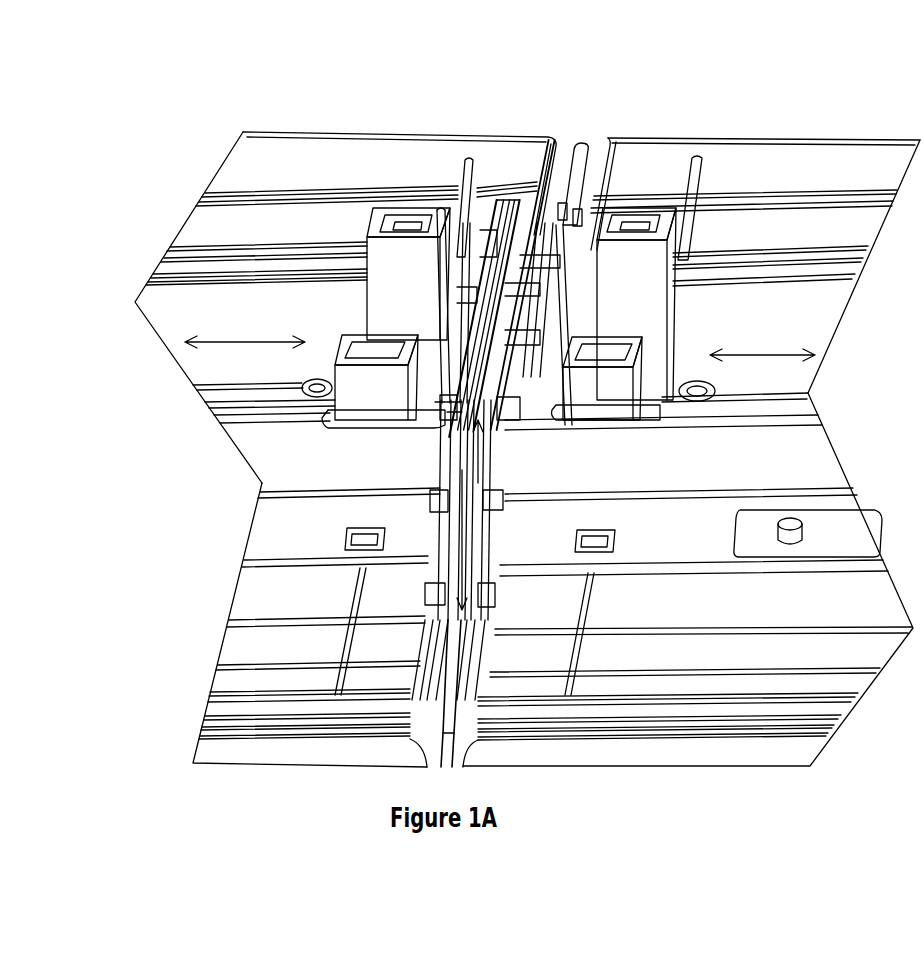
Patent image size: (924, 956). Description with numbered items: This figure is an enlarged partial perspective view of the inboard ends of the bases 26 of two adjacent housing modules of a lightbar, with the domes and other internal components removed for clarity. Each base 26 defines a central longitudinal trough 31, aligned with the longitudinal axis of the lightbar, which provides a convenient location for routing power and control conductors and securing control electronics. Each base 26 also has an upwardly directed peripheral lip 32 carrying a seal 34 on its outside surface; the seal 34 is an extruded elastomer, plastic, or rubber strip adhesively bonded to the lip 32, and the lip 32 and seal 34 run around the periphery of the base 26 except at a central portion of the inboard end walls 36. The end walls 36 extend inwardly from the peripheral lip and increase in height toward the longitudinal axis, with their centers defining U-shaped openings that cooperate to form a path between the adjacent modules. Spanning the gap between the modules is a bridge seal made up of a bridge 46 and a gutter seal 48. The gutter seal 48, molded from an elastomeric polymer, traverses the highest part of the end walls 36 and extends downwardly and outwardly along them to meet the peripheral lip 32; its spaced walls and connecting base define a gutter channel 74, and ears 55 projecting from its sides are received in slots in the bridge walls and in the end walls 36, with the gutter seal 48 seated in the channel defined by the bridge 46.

The base 26 is at (285, 762).
The longitudinal trough 31 is at (245, 345).
The peripheral lip 32 is at (420, 137).
The seal 34 is at (575, 152).
The inboard end wall 36 is at (440, 468).
The bridge 46 is at (467, 320).
The gutter seal 48 is at (512, 290).
The ears 55 is at (440, 490).
The gutter channel 74 is at (470, 520).